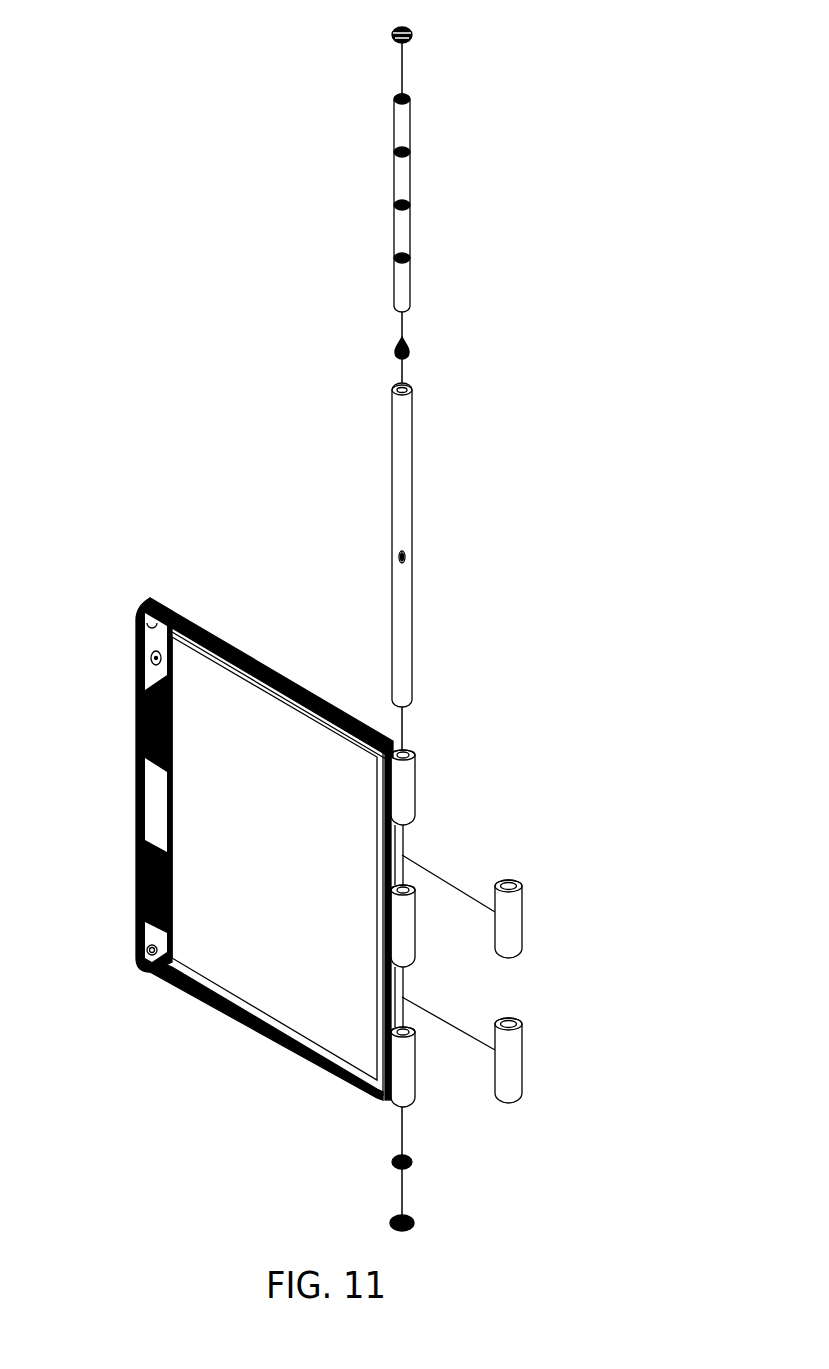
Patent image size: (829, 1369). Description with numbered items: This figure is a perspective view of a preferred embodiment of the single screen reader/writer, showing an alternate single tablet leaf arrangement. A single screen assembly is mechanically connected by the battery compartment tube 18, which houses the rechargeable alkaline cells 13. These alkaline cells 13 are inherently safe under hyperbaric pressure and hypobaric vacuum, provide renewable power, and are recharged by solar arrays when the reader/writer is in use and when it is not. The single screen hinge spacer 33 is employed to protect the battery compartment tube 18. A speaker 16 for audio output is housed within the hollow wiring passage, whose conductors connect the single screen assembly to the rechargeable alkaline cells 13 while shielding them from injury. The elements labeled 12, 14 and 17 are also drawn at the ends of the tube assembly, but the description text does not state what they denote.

The knob 12 is at (412, 31).
The rechargeable alkaline cells 13 is at (412, 108).
The connector 14 is at (407, 342).
The battery compartment tube 18 is at (412, 460).
The single screen hinge spacer 33 is at (521, 880).
The speaker 16 is at (397, 1156).
The end cap 17 is at (392, 1215).